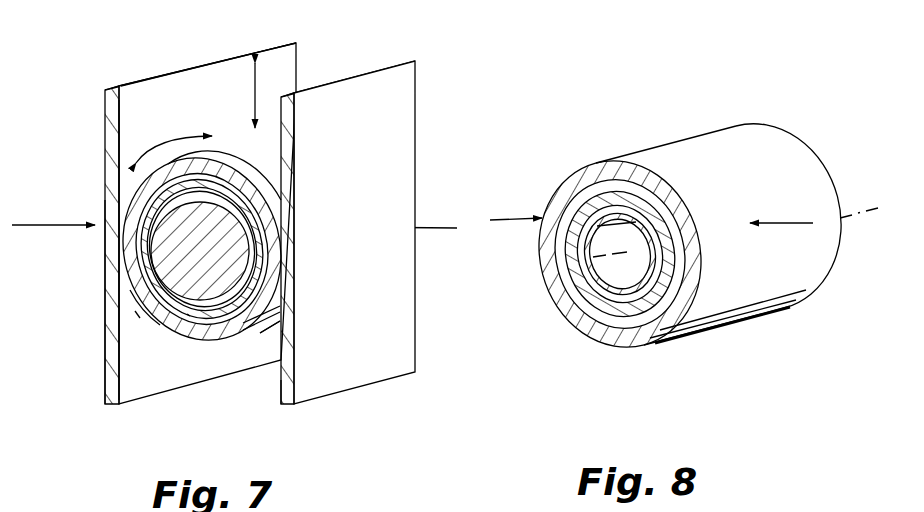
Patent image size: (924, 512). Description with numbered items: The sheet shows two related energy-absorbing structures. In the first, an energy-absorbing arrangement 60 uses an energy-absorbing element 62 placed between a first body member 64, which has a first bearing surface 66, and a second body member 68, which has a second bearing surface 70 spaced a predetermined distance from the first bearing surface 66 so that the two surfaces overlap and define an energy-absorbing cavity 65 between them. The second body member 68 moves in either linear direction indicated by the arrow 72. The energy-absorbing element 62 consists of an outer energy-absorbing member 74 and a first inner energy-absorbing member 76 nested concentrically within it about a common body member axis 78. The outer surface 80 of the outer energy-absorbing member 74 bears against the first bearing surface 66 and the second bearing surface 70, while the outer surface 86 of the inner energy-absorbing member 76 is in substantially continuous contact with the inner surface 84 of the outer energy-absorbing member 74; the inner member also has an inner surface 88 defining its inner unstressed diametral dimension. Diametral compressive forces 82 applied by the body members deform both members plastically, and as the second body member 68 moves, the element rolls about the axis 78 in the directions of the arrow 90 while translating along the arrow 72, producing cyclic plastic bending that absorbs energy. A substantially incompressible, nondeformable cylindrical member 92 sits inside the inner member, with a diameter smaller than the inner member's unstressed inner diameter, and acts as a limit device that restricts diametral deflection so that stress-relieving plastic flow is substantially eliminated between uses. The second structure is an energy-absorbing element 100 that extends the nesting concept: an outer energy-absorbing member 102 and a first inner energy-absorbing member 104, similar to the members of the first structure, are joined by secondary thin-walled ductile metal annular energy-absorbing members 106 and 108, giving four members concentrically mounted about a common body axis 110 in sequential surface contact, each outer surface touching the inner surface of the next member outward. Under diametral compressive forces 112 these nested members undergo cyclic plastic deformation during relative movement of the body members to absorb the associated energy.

In FIG. 7, the energy-absorbing arrangement 60 is at (437, 75).
In FIG. 7, the energy-absorbing element 62 is at (120, 172).
In FIG. 7, the first body member 64 is at (102, 379).
In FIG. 7, the energy-absorbing cavity 65 is at (232, 104).
In FIG. 7, the first bearing surface 66 is at (133, 389).
In FIG. 7, the second body member 68 is at (328, 383).
In FIG. 7, the second bearing surface 70 is at (283, 396).
In FIG. 7, the arrow indicating linear direction of movement 72 is at (262, 90).
In FIG. 7, the outer energy-absorbing member 74 is at (212, 315).
In FIG. 7, the first inner energy-absorbing member 76 is at (240, 200).
In FIG. 7, the common body member axis 78 is at (197, 240).
In FIG. 7, the outer surface of outer energy-absorbing member 80 is at (265, 332).
In FIG. 7, the diametral compressive forces 82 is at (405, 227).
In FIG. 7, the inner surface of outer energy-absorbing member 84 is at (138, 284).
In FIG. 7, the outer surface of inner energy-absorbing member 86 is at (135, 311).
In FIG. 7, the inner surface of inner energy-absorbing member 88 is at (187, 314).
In FIG. 7, the arrow indicating rolling direction 90 is at (186, 133).
In FIG. 7, the incompressible cylindrical member 92 is at (230, 240).
In FIG. 8, the energy-absorbing element 100 is at (712, 93).
In FIG. 8, the outer energy-absorbing member 102 is at (577, 322).
In FIG. 8, the first inner energy-absorbing member 104 is at (595, 330).
In FIG. 8, the secondary energy-absorbing member 106 is at (628, 310).
In FIG. 8, the secondary energy-absorbing member 108 is at (648, 290).
In FIG. 8, the common body axis 110 is at (597, 260).
In FIG. 8, the diametral compressive forces 112 is at (505, 220).